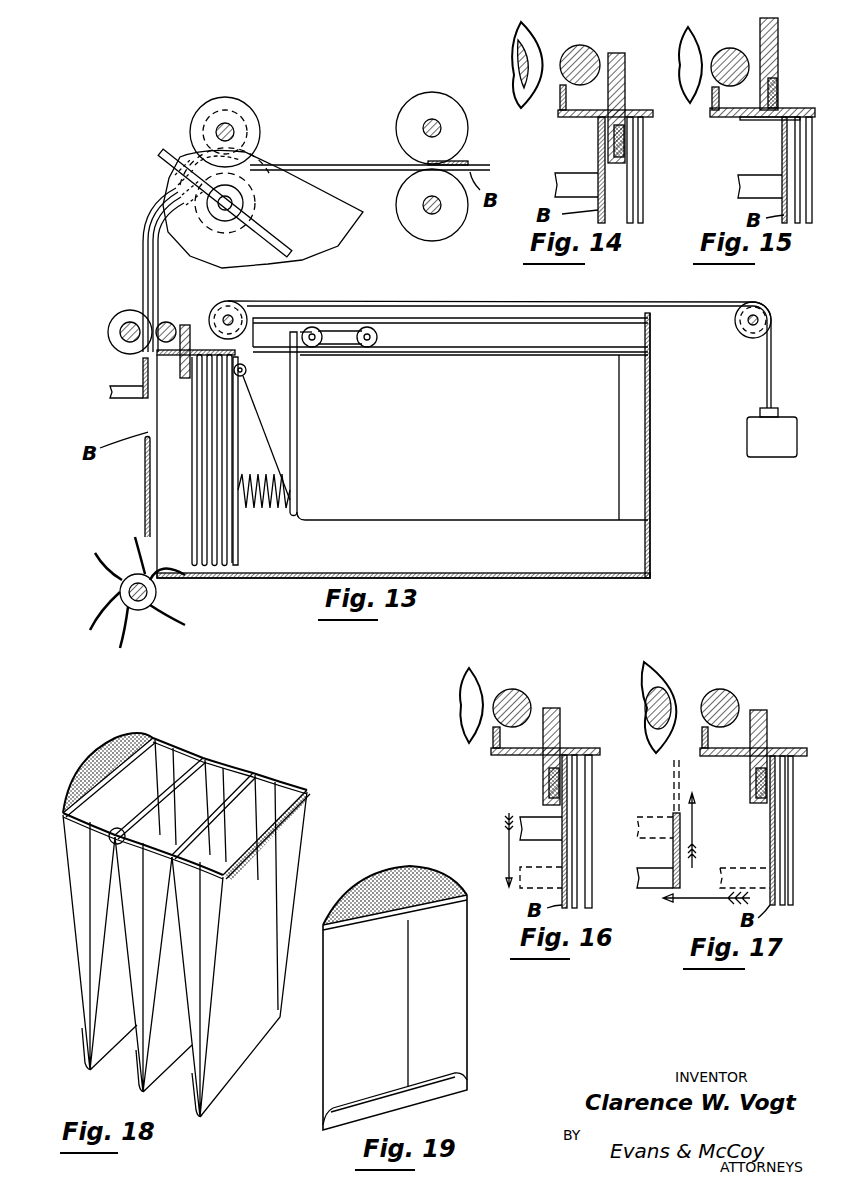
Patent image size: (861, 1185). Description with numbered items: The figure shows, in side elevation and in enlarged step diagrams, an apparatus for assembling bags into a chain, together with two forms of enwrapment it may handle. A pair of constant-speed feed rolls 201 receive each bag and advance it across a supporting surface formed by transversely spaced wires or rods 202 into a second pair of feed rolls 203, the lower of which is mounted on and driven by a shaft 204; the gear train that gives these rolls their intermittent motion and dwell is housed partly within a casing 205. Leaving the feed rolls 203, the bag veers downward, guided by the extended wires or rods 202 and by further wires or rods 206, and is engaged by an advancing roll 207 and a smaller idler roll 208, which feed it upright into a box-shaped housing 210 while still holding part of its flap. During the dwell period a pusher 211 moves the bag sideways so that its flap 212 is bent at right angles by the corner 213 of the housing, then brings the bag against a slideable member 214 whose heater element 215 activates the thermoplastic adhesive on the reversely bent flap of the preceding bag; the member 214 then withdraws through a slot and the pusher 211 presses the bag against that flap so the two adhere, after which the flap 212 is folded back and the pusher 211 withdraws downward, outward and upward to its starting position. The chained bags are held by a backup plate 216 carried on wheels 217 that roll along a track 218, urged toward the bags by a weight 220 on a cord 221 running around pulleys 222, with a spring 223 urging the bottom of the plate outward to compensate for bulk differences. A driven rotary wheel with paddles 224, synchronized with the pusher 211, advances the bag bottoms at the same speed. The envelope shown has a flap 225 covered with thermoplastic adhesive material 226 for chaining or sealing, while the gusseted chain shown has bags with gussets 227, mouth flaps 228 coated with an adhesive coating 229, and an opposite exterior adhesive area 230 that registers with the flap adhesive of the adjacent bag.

In FIG. 13, the feed rolls 201 is at (408, 104).
In FIG. 13, the wires or rods 202 is at (302, 152).
In FIG. 13, the feed rolls 203 is at (201, 110).
In FIG. 13, the shaft 204 is at (222, 203).
In FIG. 13, the casing 205 is at (322, 237).
In FIG. 13, the wires or rods 206 is at (146, 244).
In FIG. 13, the advancing roll 207 is at (110, 323).
In FIG. 14, the advancing roll 207 is at (520, 37).
In FIG. 15, the advancing roll 207 is at (688, 45).
In FIG. 16, the advancing roll 207 is at (468, 690).
In FIG. 17, the advancing roll 207 is at (655, 664).
In FIG. 13, the idler roll 208 is at (170, 321).
In FIG. 14, the idler roll 208 is at (582, 46).
In FIG. 15, the idler roll 208 is at (731, 48).
In FIG. 16, the idler roll 208 is at (512, 689).
In FIG. 17, the idler roll 208 is at (722, 689).
In FIG. 13, the housing 210 is at (146, 490).
In FIG. 14, the housing 210 is at (640, 110).
In FIG. 15, the housing 210 is at (803, 110).
In FIG. 16, the housing 210 is at (592, 747).
In FIG. 17, the housing 210 is at (797, 747).
In FIG. 13, the pusher 211 is at (125, 388).
In FIG. 14, the pusher 211 is at (598, 160).
In FIG. 15, the pusher 211 is at (782, 162).
In FIG. 16, the pusher 211 is at (558, 840).
In FIG. 17, the pusher 211 is at (672, 850).
In FIG. 13, the flap 212 is at (196, 352).
In FIG. 14, the flap 212 is at (572, 118).
In FIG. 15, the flap 212 is at (760, 120).
In FIG. 16, the flap 212 is at (549, 765).
In FIG. 17, the flap 212 is at (750, 768).
In FIG. 13, the corner 213 is at (150, 388).
In FIG. 14, the corner 213 is at (560, 115).
In FIG. 15, the corner 213 is at (712, 118).
In FIG. 16, the corner 213 is at (492, 752).
In FIG. 17, the corner 213 is at (702, 752).
In FIG. 13, the slideable member 214 is at (192, 324).
In FIG. 14, the slideable member 214 is at (616, 52).
In FIG. 15, the slideable member 214 is at (779, 30).
In FIG. 16, the slideable member 214 is at (551, 707).
In FIG. 17, the slideable member 214 is at (760, 709).
In FIG. 14, the heater element 215 is at (622, 145).
In FIG. 15, the heater element 215 is at (780, 82).
In FIG. 16, the heater element 215 is at (556, 784).
In FIG. 17, the heater element 215 is at (765, 788).
In FIG. 13, the backup plate 216 is at (240, 447).
In FIG. 13, the wheels 217 is at (368, 350).
In FIG. 13, the track 218 is at (468, 332).
In FIG. 13, the weight 220 is at (748, 437).
In FIG. 13, the cord 221 is at (388, 302).
In FIG. 13, the pulleys 222 is at (247, 313).
In FIG. 13, the spring 223 is at (270, 508).
In FIG. 13, the paddles 224 is at (180, 587).
In FIG. 19, the flap 225 is at (343, 887).
In FIG. 19, the adhesive material 226 is at (418, 868).
In FIG. 18, the gussets 227 is at (190, 755).
In FIG. 18, the flaps 228 is at (84, 770).
In FIG. 18, the adhesive coating 229 is at (118, 734).
In FIG. 18, the adhesive area 230 is at (262, 868).